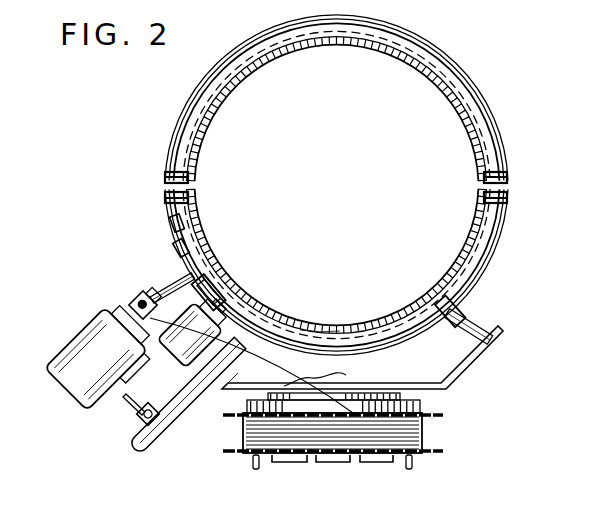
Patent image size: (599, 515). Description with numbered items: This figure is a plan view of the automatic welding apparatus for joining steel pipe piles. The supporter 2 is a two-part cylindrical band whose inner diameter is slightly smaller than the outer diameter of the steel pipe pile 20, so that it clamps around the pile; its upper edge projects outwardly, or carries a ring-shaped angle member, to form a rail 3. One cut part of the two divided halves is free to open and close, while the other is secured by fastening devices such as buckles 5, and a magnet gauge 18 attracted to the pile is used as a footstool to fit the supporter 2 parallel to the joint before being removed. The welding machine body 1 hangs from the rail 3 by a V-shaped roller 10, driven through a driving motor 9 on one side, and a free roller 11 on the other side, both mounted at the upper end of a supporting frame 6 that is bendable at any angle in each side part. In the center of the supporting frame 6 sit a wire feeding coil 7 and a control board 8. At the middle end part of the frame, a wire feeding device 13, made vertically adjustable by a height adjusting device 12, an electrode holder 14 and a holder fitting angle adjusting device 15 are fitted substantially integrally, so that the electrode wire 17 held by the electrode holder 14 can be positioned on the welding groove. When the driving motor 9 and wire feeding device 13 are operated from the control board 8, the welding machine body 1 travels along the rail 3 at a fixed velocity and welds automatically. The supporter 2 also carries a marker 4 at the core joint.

The welding machine body 1 is at (98, 278).
The supporter 2 is at (479, 247).
The rail 3 is at (430, 334).
The right core clamp 4 is at (504, 208).
The buckles 5 is at (176, 214).
The supporting frame 6 is at (467, 374).
The wire feeding coil 7 is at (423, 433).
The control board 8 is at (362, 458).
The driving motor 9 is at (183, 371).
The V-shaped roller 10 is at (243, 315).
The free roller 11 is at (468, 305).
The height adjusting device 12 is at (137, 418).
The wire feeding device 13 is at (77, 342).
The electrode holder 14 is at (157, 297).
The holder fitting angle adjusting device 15 is at (131, 303).
The electrode wire 17 is at (262, 365).
The magnet gauge 18 is at (178, 256).
The steel pipe pile 20 is at (320, 336).